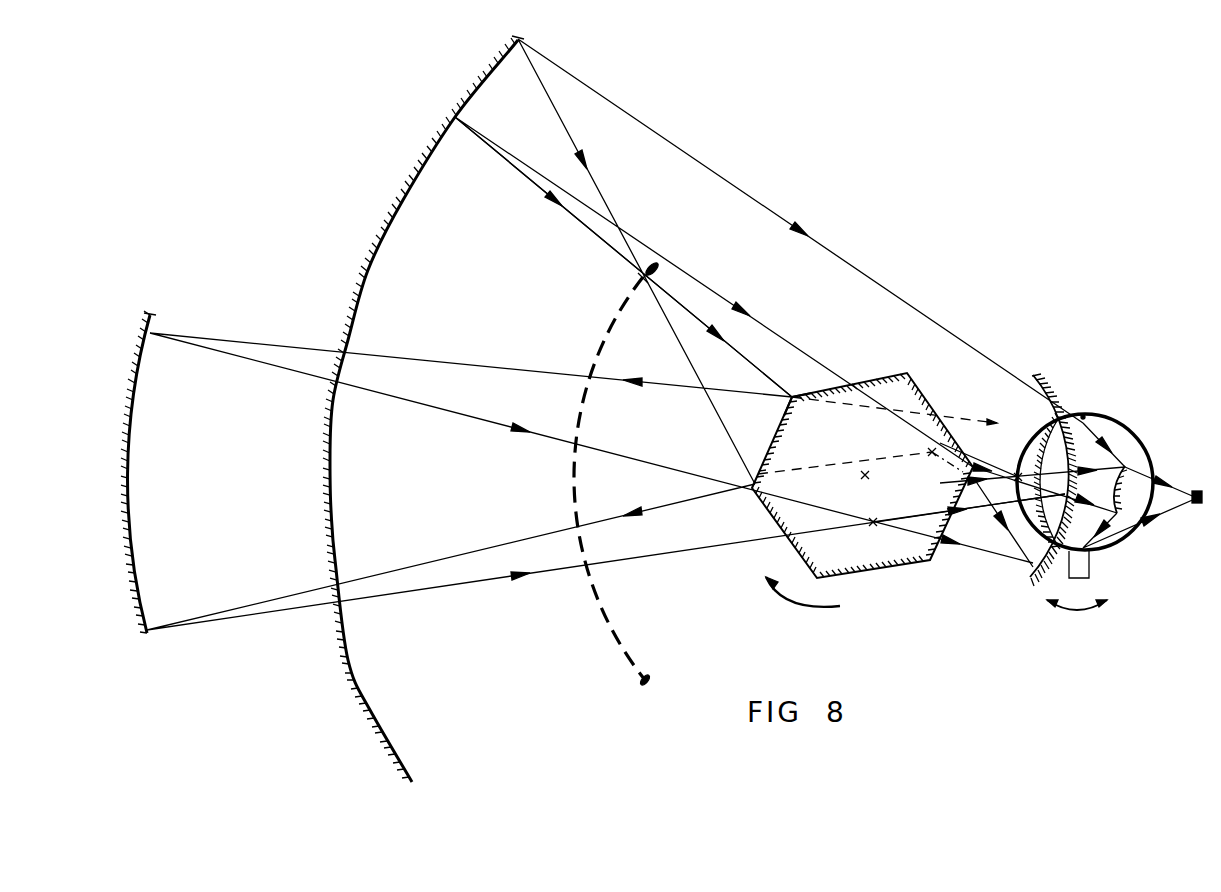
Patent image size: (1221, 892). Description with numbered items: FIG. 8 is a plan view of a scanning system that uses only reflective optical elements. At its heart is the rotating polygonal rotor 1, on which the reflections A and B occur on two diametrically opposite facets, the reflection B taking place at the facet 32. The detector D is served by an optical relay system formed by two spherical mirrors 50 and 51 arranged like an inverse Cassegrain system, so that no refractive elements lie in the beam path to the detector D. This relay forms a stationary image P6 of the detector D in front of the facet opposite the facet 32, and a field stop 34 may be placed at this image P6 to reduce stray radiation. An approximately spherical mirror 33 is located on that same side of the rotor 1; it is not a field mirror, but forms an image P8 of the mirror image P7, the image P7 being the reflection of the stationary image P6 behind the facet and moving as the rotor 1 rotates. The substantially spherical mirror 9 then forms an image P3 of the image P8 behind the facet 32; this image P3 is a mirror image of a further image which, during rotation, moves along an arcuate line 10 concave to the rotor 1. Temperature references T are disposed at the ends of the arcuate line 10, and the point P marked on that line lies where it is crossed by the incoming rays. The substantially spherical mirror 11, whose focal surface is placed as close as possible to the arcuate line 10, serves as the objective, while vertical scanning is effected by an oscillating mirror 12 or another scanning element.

The substantially spherical mirror 9 is at (150, 637).
The substantially spherical mirror 11 is at (406, 764).
The arcuate line 10 is at (625, 650).
The rotor 1 is at (868, 577).
The facet 32 is at (791, 396).
The approximately spherical mirror 33 is at (1030, 574).
The field stop 34 is at (1018, 460).
The oscillating mirror 12 is at (1112, 527).
The spherical mirror 50 is at (1084, 416).
The spherical mirror 51 is at (1127, 466).
The detector D is at (1196, 502).
The point P is at (640, 279).
The temperature references T is at (660, 672).
The reflection B is at (772, 443).
The reflection A is at (963, 477).
The image P3 is at (993, 422).
The stationary image P6 is at (1017, 476).
The mirror image P7 is at (931, 454).
The image P8 is at (872, 524).